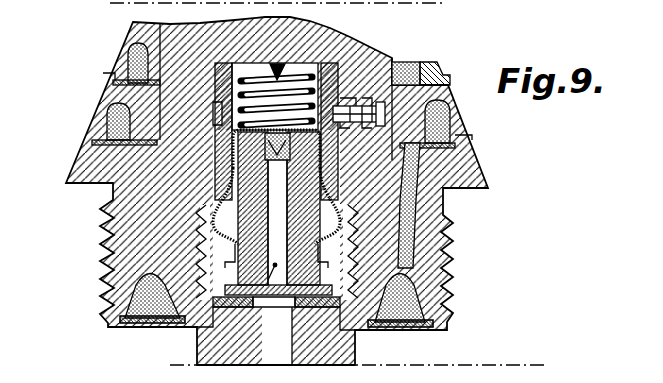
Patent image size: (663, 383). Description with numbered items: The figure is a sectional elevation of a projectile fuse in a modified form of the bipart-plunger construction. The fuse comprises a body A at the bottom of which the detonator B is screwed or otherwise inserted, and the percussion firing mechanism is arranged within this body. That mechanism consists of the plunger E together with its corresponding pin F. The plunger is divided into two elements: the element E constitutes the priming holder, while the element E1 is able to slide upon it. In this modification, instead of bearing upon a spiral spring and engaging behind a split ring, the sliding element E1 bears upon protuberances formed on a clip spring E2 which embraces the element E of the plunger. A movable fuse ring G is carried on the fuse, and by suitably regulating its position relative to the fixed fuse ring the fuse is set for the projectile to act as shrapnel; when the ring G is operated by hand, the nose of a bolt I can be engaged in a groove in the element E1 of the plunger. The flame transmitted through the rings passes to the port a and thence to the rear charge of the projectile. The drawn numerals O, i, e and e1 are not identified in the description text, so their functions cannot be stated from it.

The movable fuse ring G is at (100, 105).
The pin of the percussion firing mechanism F is at (283, 68).
The spring chamber O is at (317, 75).
The bolt I is at (358, 108).
The packing gland i is at (403, 60).
The passage e is at (360, 137).
The element E' of the bipart plunger E1 is at (228, 162).
The clip spring E2 is at (475, 272).
The plunger of the percussion firing mechanism E is at (443, 238).
The fuse body A is at (123, 290).
The port a is at (120, 327).
The joint e1 is at (200, 328).
The detonator B is at (323, 350).